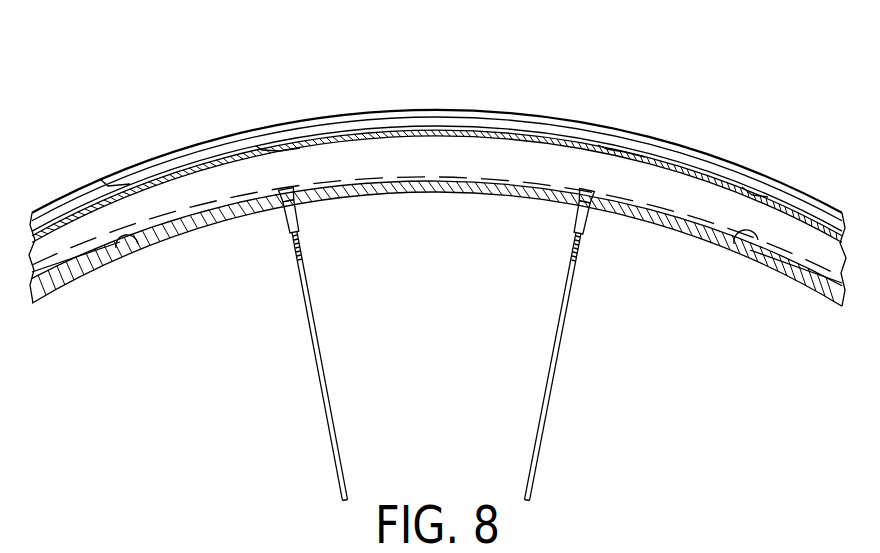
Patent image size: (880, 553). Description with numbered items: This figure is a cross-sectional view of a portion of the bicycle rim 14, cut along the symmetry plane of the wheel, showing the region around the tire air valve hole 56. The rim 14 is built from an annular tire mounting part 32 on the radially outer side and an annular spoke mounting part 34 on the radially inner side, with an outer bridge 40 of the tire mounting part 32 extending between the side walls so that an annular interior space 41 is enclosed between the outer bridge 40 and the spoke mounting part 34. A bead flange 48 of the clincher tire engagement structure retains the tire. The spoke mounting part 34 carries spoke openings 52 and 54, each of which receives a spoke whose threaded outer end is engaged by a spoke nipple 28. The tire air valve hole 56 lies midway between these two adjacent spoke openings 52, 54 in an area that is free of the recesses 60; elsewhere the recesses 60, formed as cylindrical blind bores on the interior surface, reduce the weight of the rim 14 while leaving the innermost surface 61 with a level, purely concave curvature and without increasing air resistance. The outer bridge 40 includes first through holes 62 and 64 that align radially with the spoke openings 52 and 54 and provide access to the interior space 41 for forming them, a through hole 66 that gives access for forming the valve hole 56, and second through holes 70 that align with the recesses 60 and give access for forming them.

The rim 14 is at (180, 147).
The spoke nipple 28 is at (285, 212).
The annular tire mounting part 32 is at (463, 108).
The annular spoke mounting part 34 is at (376, 196).
The outer bridge 40 is at (515, 137).
The annular interior space 41 is at (370, 160).
The bead flange 48 is at (668, 143).
The spoke opening 52 is at (585, 213).
The spoke opening 54 is at (296, 213).
The tire air valve hole 56 is at (432, 194).
The recess 60 is at (127, 236).
The innermost surface 61 is at (493, 198).
The first through hole 62 is at (607, 147).
The first through hole 64 is at (267, 148).
The through hole 66 is at (428, 130).
The second through hole 70 is at (103, 184).